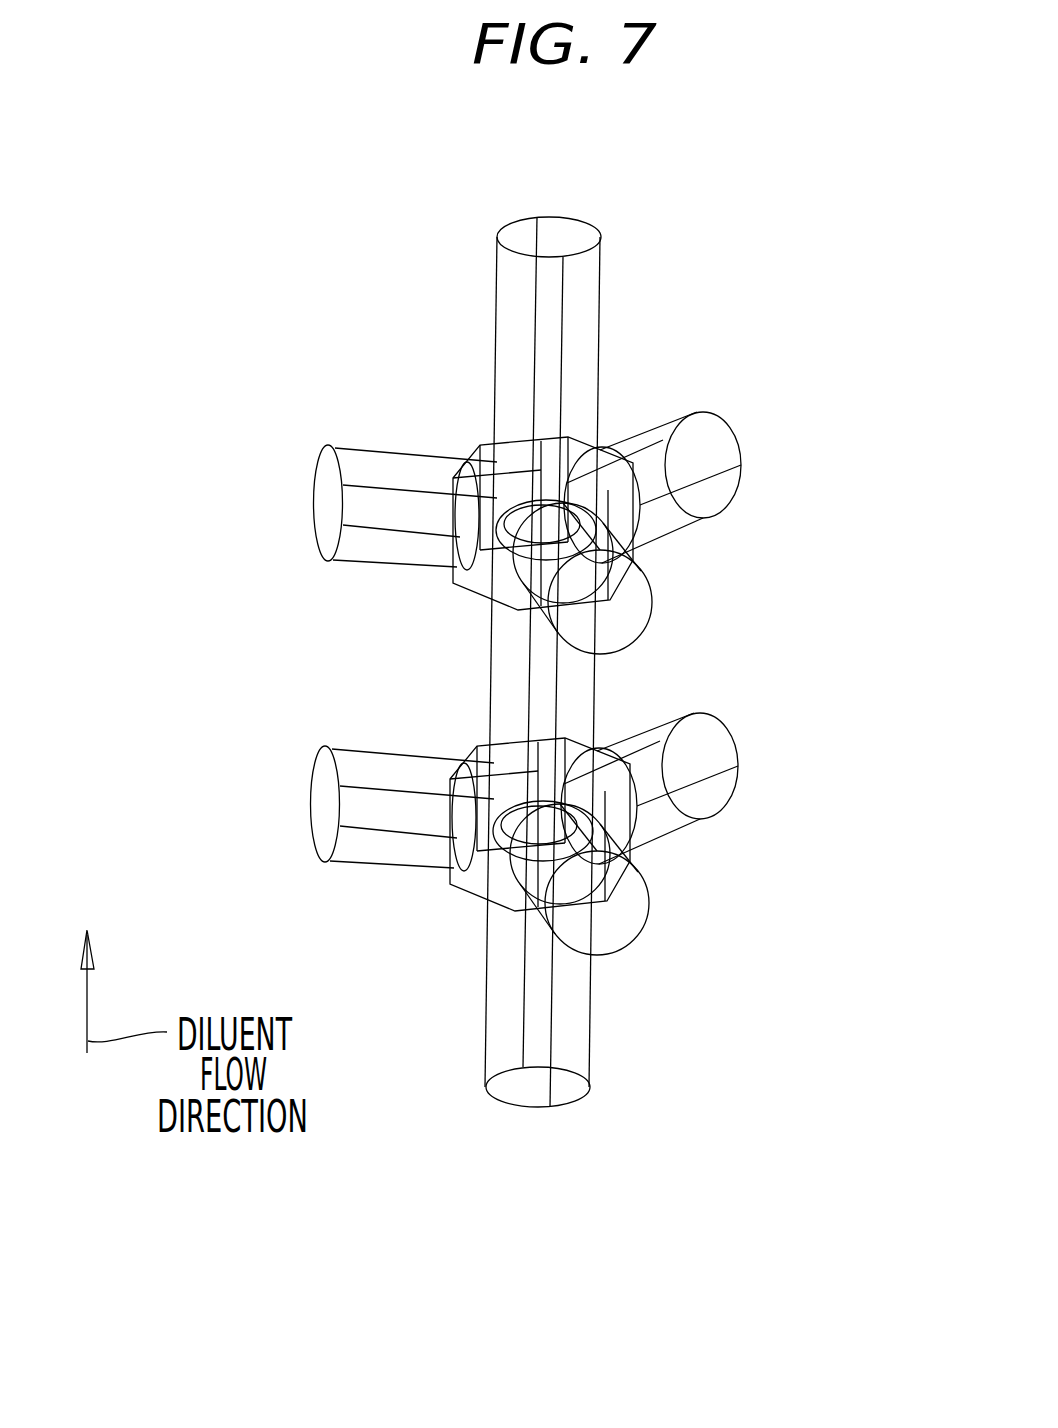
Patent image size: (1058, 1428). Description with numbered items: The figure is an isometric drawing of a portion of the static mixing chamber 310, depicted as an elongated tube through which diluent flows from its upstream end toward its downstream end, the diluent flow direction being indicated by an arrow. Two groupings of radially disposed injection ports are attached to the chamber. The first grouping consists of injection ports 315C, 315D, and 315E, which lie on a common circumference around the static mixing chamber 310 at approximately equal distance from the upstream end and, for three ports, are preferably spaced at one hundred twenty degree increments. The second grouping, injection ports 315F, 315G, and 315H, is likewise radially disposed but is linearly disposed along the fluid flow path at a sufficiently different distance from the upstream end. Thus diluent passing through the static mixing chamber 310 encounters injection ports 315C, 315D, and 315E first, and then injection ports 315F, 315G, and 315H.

The static mixing chamber 310 is at (548, 1136).
The injection port 315C is at (310, 805).
The injection port 315D is at (620, 920).
The injection port 315E is at (737, 753).
The injection port 315F is at (313, 517).
The injection port 315G is at (630, 617).
The injection port 315H is at (718, 462).